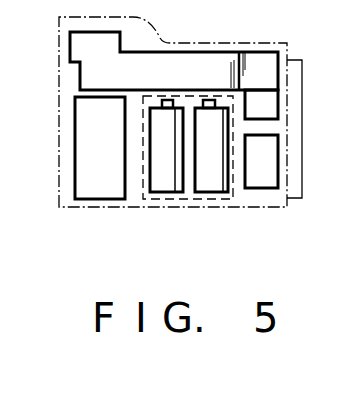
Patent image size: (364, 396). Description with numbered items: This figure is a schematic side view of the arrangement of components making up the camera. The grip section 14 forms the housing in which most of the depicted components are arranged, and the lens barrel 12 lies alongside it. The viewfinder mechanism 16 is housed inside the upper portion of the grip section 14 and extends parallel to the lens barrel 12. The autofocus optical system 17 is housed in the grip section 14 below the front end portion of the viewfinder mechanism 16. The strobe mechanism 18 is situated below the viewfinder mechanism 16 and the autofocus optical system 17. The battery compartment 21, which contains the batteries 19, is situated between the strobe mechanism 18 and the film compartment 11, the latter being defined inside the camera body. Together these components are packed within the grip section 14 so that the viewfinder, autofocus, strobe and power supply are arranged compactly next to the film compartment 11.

The film compartment 11 is at (83, 168).
The lens barrel 12 is at (302, 90).
The grip section 14 is at (240, 43).
The viewfinder mechanism 16 is at (178, 62).
The autofocus optical system 17 is at (273, 107).
The strobe mechanism 18 is at (272, 172).
The batteries 19 is at (203, 184).
The battery compartment 21 is at (232, 201).